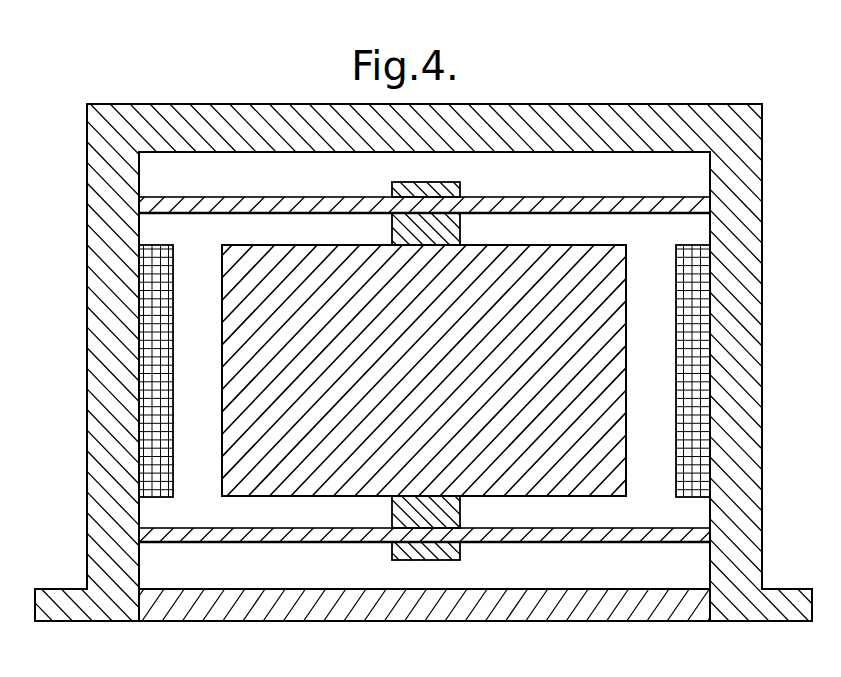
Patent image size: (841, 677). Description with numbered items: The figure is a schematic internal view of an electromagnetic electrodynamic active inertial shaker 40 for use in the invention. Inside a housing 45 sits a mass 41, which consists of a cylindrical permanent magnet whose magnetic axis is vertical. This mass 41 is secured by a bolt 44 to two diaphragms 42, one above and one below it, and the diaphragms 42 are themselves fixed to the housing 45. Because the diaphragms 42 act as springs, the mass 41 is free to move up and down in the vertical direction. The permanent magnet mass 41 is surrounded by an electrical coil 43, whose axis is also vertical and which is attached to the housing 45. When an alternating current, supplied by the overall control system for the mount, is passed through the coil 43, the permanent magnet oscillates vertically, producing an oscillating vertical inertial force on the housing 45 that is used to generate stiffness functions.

The electromagnetic electrodynamic active inertial shaker 40 is at (211, 86).
The mass 41 is at (222, 420).
The diaphragms 42 is at (700, 196).
The electrical coil 43 is at (138, 366).
The bolt 44 is at (460, 190).
The housing 45 is at (87, 148).